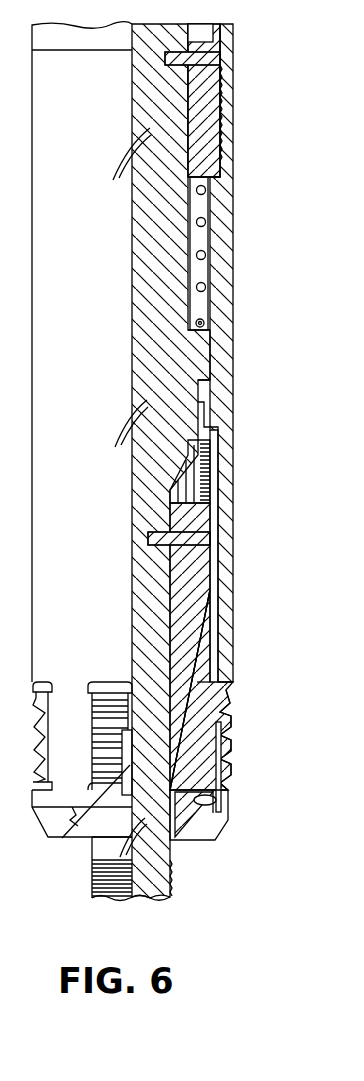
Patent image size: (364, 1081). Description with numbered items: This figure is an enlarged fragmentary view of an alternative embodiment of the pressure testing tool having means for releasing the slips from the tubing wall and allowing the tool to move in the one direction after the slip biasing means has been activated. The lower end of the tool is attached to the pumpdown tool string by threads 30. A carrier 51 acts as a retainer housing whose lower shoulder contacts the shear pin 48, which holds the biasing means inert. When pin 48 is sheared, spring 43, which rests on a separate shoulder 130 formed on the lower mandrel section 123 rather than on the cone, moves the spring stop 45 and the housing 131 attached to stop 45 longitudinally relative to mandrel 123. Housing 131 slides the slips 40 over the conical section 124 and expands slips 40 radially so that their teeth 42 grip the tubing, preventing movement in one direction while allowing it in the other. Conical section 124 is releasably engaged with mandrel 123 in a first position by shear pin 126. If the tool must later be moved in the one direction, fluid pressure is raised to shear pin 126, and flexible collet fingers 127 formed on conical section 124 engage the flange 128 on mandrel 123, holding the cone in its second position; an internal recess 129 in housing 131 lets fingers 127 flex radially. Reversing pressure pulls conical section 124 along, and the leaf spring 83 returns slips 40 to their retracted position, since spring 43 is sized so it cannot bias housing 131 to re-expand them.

The threads 30 is at (172, 877).
The slips 40 is at (207, 700).
The teeth 42 is at (233, 740).
The spring 43 is at (205, 189).
The spring stop 45 is at (203, 121).
The shear pin 48 is at (205, 56).
The carrier 51 is at (228, 26).
The leaf spring 83 is at (218, 771).
The lower mandrel section 123 is at (157, 373).
The conical section 124 is at (190, 592).
The shear pin 126 is at (203, 538).
The collet fingers 127 is at (212, 462).
The flange 128 is at (212, 388).
The internal recess 129 is at (217, 602).
The shoulder 130 is at (203, 320).
The housing 131 is at (229, 252).